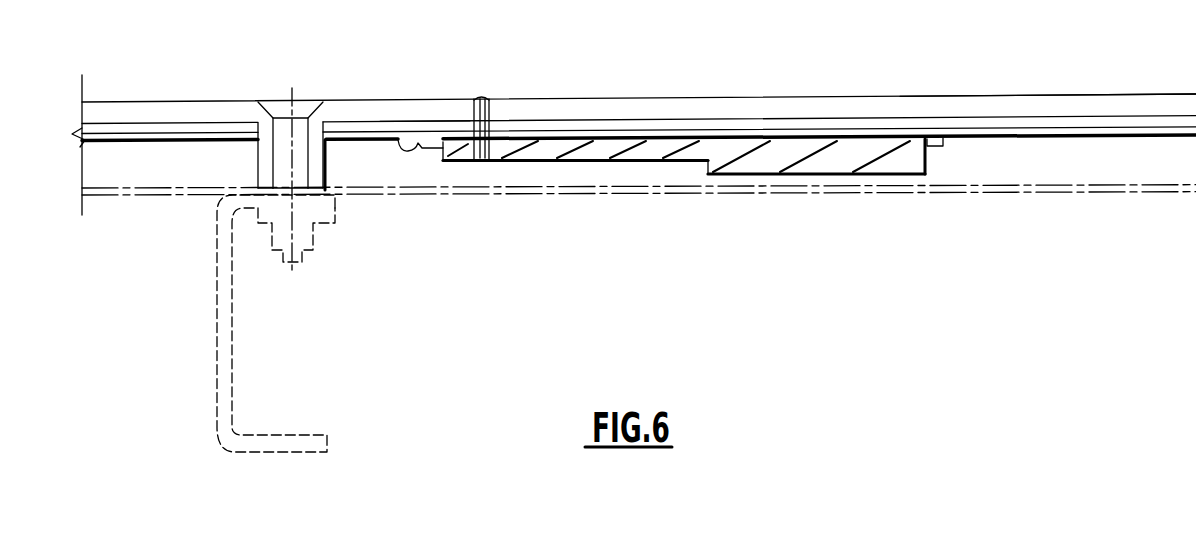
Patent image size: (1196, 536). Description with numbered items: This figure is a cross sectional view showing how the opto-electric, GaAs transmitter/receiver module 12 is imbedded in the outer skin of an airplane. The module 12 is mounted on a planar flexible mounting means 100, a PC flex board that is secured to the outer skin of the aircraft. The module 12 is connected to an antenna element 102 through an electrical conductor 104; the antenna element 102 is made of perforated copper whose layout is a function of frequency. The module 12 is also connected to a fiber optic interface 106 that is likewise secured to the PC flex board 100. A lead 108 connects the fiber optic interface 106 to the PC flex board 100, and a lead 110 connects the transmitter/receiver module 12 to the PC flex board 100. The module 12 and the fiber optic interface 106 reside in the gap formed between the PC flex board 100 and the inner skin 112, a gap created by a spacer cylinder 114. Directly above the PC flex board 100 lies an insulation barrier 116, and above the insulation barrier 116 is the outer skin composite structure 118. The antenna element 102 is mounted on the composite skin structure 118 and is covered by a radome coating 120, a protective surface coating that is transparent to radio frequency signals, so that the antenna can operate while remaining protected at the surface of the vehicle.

The opto-electric transmitter/receiver module 12 is at (540, 162).
The planar flexible mounting means 100 is at (1043, 138).
The antenna element 102 is at (772, 97).
The electrical conductor 104 is at (469, 101).
The fiber optic interface 106 is at (803, 175).
The lead 108 is at (932, 147).
The lead 110 is at (399, 141).
The inner skin 112 is at (402, 193).
The spacer cylinder 114 is at (328, 172).
The insulation barrier 116 is at (1085, 133).
The outer skin composite structure 118 is at (432, 108).
The radome coating 120 is at (1015, 95).